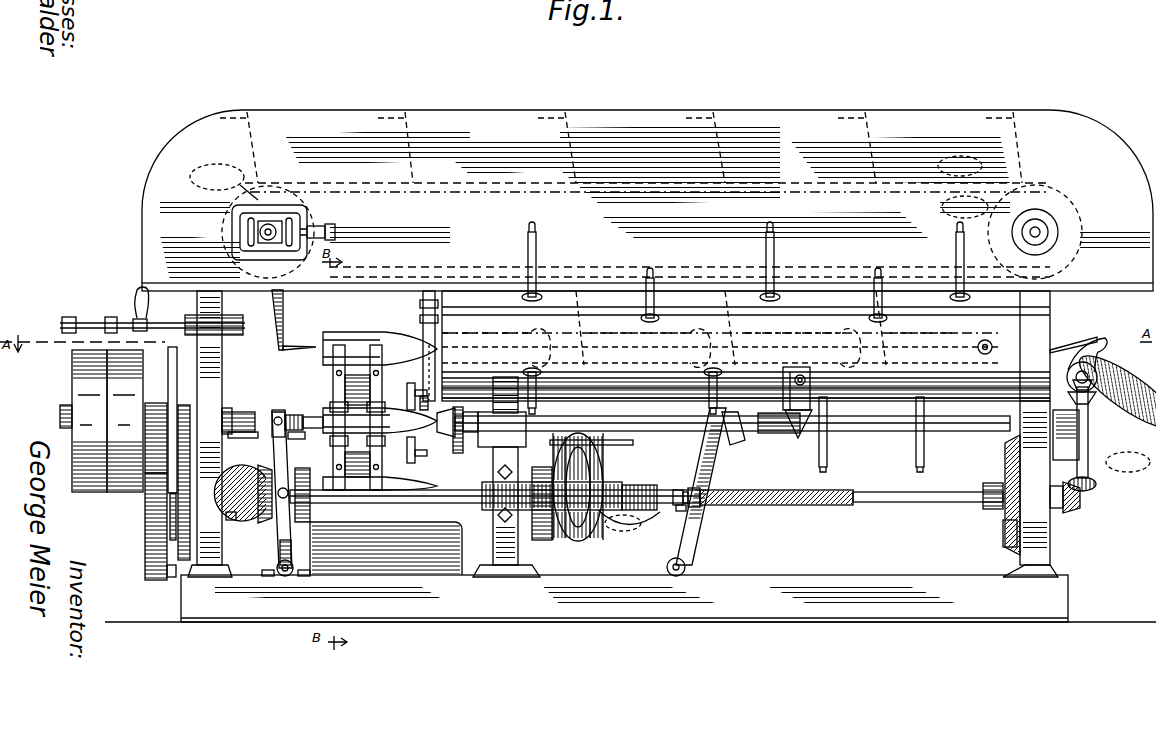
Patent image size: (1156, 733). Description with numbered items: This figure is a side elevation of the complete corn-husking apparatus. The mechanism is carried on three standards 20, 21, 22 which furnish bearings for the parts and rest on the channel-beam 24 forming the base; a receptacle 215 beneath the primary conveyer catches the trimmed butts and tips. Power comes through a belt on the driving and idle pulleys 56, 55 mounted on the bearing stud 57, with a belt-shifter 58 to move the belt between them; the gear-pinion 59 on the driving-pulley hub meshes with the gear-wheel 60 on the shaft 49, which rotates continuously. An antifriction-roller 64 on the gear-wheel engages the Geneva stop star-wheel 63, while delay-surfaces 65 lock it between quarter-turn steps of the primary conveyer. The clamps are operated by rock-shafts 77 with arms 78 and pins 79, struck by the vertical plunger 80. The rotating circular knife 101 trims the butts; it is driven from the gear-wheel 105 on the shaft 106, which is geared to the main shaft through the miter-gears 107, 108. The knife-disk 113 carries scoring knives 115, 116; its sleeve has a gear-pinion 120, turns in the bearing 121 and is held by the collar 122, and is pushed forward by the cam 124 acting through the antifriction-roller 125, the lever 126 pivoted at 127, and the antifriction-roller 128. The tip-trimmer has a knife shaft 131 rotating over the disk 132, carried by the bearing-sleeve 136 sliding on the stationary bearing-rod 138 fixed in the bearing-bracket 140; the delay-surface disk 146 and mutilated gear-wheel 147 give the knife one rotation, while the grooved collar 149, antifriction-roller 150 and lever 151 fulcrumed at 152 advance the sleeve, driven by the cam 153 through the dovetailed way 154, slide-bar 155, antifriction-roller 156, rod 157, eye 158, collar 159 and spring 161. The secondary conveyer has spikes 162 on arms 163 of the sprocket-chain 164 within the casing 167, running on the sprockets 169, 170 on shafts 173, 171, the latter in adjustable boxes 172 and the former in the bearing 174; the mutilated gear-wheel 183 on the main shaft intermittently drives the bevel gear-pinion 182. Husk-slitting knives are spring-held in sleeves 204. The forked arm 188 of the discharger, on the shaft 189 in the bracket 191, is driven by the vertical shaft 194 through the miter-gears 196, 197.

The standard 20 is at (210, 434).
The standard 21 is at (506, 512).
The standard 22 is at (1030, 489).
The channel-beam 24 is at (630, 598).
The shaft 49 is at (962, 492).
The idle pulley 55 is at (89, 421).
The driving-pulley 56 is at (125, 421).
The bearing stud 57 is at (60, 415).
The belt-shifter 58 is at (112, 318).
The gear-pinion 59 is at (157, 403).
The gear-wheel 60 is at (150, 538).
The Geneva stop star-wheel 63 is at (176, 388).
The antifriction-roller 64 is at (172, 578).
The delay-surfaces 65 is at (178, 516).
The rock-shafts 77 is at (364, 417).
The arms 78 is at (407, 392).
The pins 79 is at (418, 389).
The vertical plunger 80 is at (425, 331).
The circular knife 101 is at (320, 460).
The gear-wheel 105 is at (232, 512).
The shaft 106 is at (471, 493).
The miter-gear 107 is at (262, 468).
The miter-gear 108 is at (243, 522).
The knife-disk 113 is at (301, 413).
The knife 115 is at (313, 416).
The knife 116 is at (302, 442).
The gear-pinion 120 is at (228, 408).
The bearing 121 is at (248, 405).
The collar 122 is at (262, 438).
The cam 124 is at (281, 538).
The antifriction-roller 125 is at (279, 500).
The lever 126 is at (281, 548).
The pivot 127 is at (283, 576).
The antifriction-roller 128 is at (280, 410).
The shaft 131 is at (615, 445).
The disk 132 is at (462, 450).
The bearing-sleeve 136 is at (690, 430).
The bearing-rod 138 is at (792, 440).
The bearing-bracket 140 is at (800, 411).
The delay-surface disk 146 is at (588, 472).
The mutilated gear-wheel 147 is at (541, 540).
The grooved collar 149 is at (712, 425).
The antifriction-roller 150 is at (778, 433).
The lever 151 is at (740, 446).
The fulcrum 152 is at (667, 567).
The cam 153 is at (578, 540).
The dovetailed way 154 is at (552, 496).
The slide-bar 155 is at (638, 485).
The antifriction-roller 156 is at (629, 520).
The rod 157 is at (678, 490).
The eye 158 is at (700, 507).
The collar 159 is at (680, 512).
The spring 161 is at (806, 506).
The spikes 162 is at (300, 342).
The arms 163 is at (286, 330).
The sprocket-chain 164 is at (992, 183).
The casing 167 is at (647, 200).
The driving-sprocket 169 is at (1000, 216).
The sprocket-wheel 170 is at (224, 182).
The shaft 171 is at (336, 232).
The adjustable boxes 172 is at (245, 232).
The shaft 173 is at (1040, 232).
The bearing 174 is at (1045, 240).
The bevel gear-pinion 182 is at (1008, 440).
The mutilated gear-wheel 183 is at (1004, 532).
The forked arm 188 is at (1102, 345).
The shaft 189 is at (1090, 422).
The bracket 191 is at (1089, 437).
The vertical shaft 194 is at (1113, 408).
The miter-gear 196 is at (1097, 486).
The miter-gear 197 is at (1082, 504).
The sleeve 204 is at (916, 426).
The receptacle 215 is at (462, 538).